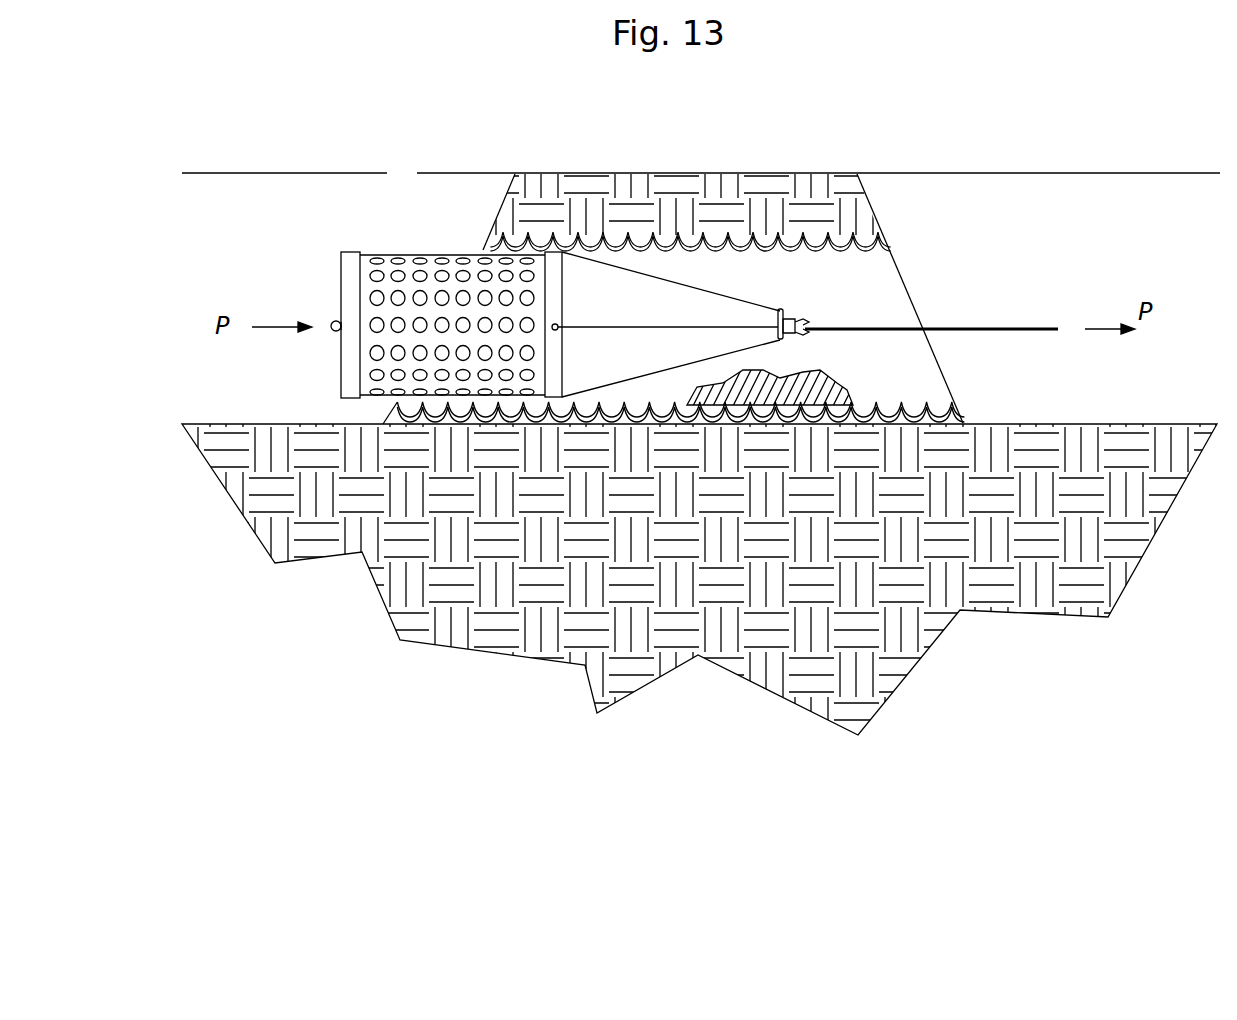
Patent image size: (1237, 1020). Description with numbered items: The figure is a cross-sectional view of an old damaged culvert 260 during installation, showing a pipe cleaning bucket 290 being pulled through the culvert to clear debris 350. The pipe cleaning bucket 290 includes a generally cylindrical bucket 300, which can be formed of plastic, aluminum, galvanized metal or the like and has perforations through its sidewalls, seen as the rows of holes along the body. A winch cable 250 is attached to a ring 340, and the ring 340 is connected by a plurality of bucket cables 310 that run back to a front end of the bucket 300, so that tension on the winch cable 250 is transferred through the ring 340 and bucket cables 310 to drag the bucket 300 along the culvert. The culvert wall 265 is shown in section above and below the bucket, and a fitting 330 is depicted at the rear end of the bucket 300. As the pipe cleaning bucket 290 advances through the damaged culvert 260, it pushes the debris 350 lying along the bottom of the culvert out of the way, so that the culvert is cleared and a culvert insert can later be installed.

The winch cable 250 is at (1003, 328).
The damaged culvert 260 is at (895, 265).
The lumen wall 265 is at (735, 190).
The pipe cleaning bucket 290 is at (418, 211).
The bucket 300 is at (352, 367).
The bucket cables 310 is at (585, 326).
The eyelet 330 is at (335, 322).
The ring 340 is at (792, 313).
The debris 350 is at (820, 376).